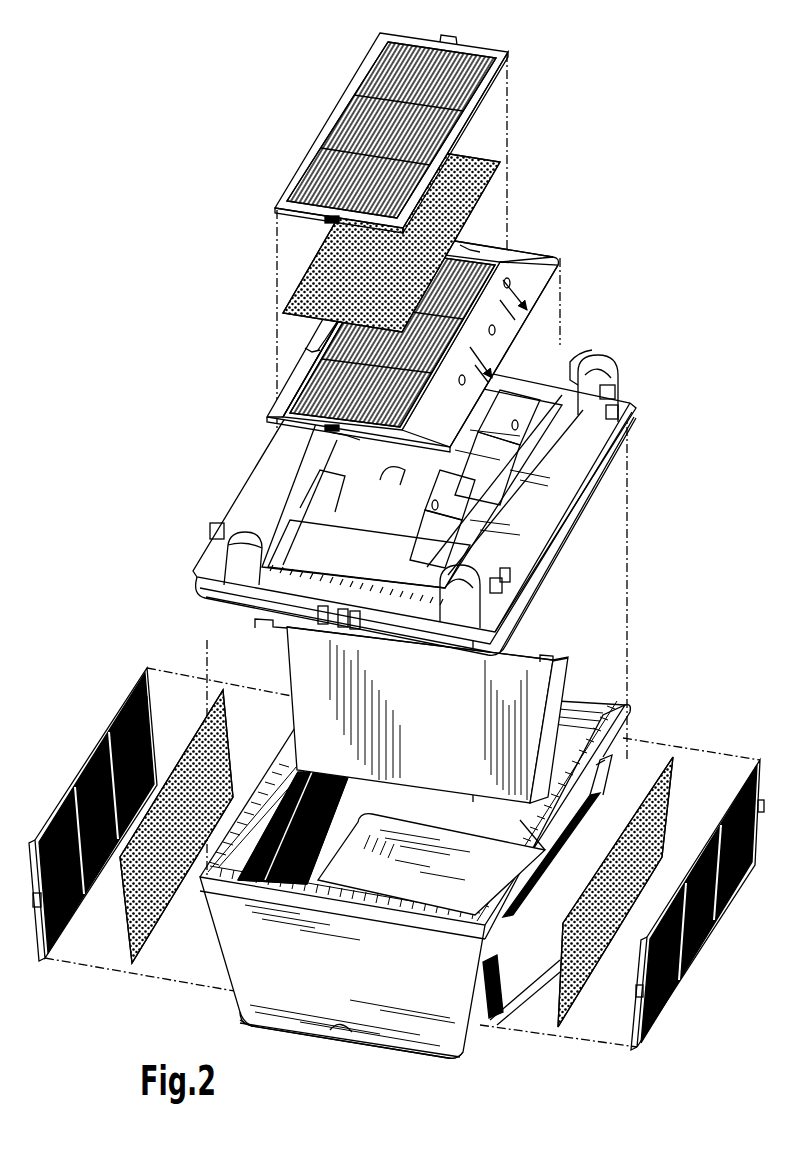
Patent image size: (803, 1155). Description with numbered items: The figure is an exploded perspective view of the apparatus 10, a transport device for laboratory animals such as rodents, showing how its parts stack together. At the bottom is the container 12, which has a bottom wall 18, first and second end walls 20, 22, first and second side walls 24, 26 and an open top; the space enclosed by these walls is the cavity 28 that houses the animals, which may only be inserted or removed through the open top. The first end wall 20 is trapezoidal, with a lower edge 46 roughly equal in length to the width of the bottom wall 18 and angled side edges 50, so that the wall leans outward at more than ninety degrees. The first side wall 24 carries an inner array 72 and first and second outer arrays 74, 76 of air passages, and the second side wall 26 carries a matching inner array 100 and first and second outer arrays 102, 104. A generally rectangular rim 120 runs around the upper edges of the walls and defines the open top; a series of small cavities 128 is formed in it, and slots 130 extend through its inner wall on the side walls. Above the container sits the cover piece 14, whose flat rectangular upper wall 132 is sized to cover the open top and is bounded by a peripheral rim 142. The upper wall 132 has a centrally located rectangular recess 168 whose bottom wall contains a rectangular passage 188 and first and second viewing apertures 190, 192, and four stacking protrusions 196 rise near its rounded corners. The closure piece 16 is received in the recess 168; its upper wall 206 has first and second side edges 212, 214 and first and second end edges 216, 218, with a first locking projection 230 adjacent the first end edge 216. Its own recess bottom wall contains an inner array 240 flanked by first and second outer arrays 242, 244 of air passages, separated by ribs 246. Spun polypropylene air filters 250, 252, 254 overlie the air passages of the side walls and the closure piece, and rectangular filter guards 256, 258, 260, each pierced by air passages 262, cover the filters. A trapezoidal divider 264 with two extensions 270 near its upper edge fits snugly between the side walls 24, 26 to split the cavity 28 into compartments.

The apparatus 10 is at (135, 290).
The container 12 is at (407, 1012).
The cover piece 14 is at (583, 417).
The closure piece 16 is at (552, 262).
The bottom wall 18 is at (300, 920).
The first end wall 20 is at (322, 989).
The second end wall 22 is at (562, 728).
The first side wall 24 is at (350, 880).
The second side wall 26 is at (527, 973).
The cavity 28 is at (352, 897).
The lower edge 46 is at (387, 1037).
The angled side edges 50 is at (253, 997).
The inner array 72 is at (280, 807).
The first outer array 74 is at (330, 780).
The second outer array 76 is at (307, 882).
The inner array 100 is at (523, 955).
The first outer array 102 is at (513, 990).
The second outer array 104 is at (587, 817).
The rim 120 is at (585, 687).
The small cavities 128 is at (627, 713).
The slots 130 is at (293, 737).
The upper wall 132 is at (567, 452).
The rim 142 is at (587, 490).
The recess 168 is at (580, 370).
The rectangular passage 188 is at (393, 500).
The first viewing aperture 190 is at (445, 545).
The second viewing aperture 192 is at (500, 472).
The stacking protrusions 196 is at (610, 360).
The upper wall 206 is at (540, 297).
The first side edge 212 is at (290, 377).
The second side edge 214 is at (533, 282).
The first end edge 216 is at (280, 428).
The second end edge 218 is at (513, 258).
The first locking projection 230 is at (337, 435).
The inner array 240 is at (330, 352).
The first outer array 242 is at (290, 395).
The second outer array 244 is at (465, 248).
The ribs 246 is at (487, 307).
The air filter 250 is at (193, 777).
The air filter 252 is at (653, 830).
The third air filter 254 is at (343, 272).
The filter guard 256 is at (107, 730).
The filter guard 258 is at (740, 970).
The filter guard 260 is at (322, 113).
The air passages 262 is at (355, 100).
The divider 264 is at (483, 690).
The extensions 270 is at (280, 620).